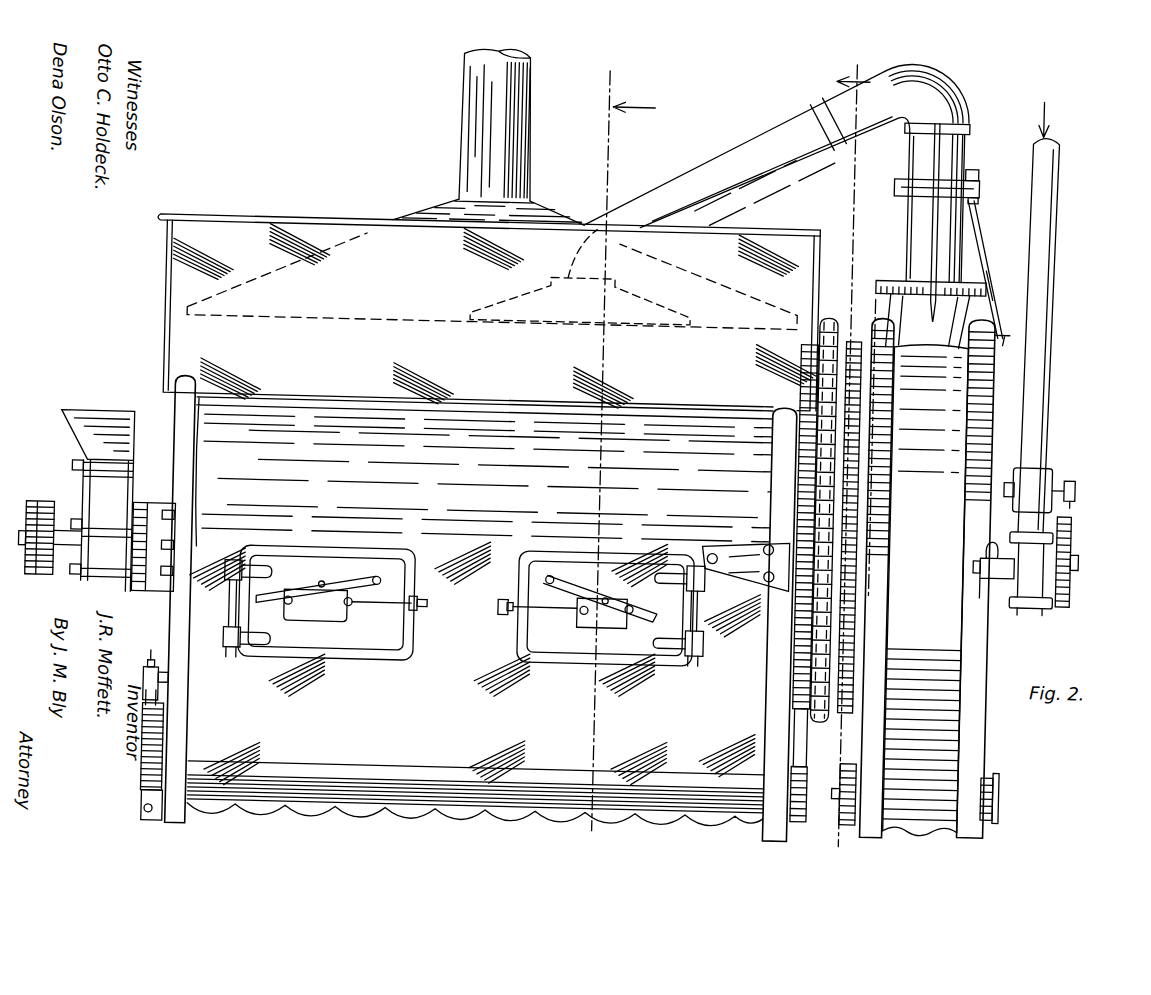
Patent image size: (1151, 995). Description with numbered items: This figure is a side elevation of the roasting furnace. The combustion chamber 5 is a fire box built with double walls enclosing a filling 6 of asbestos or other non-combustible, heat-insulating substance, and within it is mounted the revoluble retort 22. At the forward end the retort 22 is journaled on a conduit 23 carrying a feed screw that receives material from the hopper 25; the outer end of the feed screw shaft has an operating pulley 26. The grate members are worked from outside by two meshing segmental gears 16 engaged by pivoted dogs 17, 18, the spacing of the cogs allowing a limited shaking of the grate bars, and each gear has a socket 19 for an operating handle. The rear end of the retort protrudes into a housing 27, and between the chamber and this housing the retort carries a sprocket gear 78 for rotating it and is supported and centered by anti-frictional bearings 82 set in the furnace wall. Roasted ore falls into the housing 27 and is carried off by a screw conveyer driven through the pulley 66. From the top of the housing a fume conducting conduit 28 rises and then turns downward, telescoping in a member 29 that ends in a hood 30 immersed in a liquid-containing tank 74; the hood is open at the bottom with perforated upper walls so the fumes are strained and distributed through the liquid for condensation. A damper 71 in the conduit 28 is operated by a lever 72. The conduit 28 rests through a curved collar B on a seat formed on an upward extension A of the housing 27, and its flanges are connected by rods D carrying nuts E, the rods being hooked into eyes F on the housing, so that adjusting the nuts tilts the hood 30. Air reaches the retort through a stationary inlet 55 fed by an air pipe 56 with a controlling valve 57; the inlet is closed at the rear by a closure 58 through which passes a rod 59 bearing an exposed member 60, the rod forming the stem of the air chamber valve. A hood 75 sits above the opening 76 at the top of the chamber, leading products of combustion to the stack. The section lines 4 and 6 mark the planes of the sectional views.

The combustion chamber 5 is at (478, 612).
The filling 6 is at (614, 456).
The section line 4— 4 is at (848, 454).
The segmental gears 16 is at (168, 740).
The pivoted dog 17 is at (169, 688).
The pivoted dog 18 is at (153, 662).
The socket 19 is at (173, 807).
The revoluble retort 22 is at (845, 313).
The conduit 23 is at (234, 585).
The hopper 25 is at (76, 437).
The operating pulley 26 is at (47, 578).
The housing 27 is at (928, 578).
The fume conducting conduit 28 is at (904, 222).
The telescoping member 29 is at (777, 146).
The hood 30 is at (494, 288).
The stationary inlet 55 is at (998, 560).
The air pipe 56 is at (1050, 231).
The controlling valve 57 is at (1054, 451).
The closure 58 is at (1057, 524).
The rod 59 is at (1082, 540).
The exposed member 60 is at (1064, 588).
The pulley 66 is at (866, 768).
The damper 71 is at (957, 150).
The lever 72 is at (928, 241).
The liquid-containing tank 74 is at (487, 313).
The hood 75 is at (428, 208).
The opening 76 is at (525, 102).
The sprocket gear 78 is at (832, 536).
The anti-frictional bearings 82 is at (800, 492).
The upward extension A is at (891, 289).
The collar B is at (975, 255).
The rod D is at (977, 212).
The nut E is at (975, 154).
The eye F is at (1019, 319).